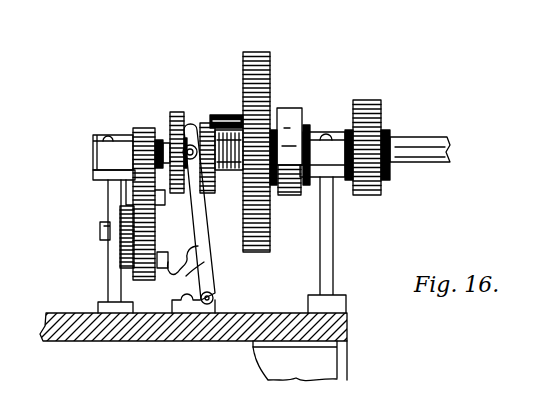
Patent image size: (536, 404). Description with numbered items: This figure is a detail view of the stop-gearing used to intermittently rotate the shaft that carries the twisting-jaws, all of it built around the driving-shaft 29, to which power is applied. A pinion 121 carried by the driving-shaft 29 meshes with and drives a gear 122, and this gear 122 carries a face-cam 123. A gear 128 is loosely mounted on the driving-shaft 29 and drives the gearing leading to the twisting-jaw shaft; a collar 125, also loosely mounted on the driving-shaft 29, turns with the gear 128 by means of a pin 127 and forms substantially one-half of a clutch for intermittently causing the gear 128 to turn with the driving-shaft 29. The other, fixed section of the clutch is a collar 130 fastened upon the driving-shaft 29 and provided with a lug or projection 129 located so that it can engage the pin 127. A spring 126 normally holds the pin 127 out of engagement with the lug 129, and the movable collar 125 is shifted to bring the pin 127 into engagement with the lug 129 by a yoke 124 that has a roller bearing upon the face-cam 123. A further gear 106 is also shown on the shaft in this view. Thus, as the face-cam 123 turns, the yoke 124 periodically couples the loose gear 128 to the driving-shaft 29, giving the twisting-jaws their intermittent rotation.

The pinion 121 is at (126, 135).
The gear 122 is at (155, 190).
The face-cam 123 is at (162, 236).
The yoke 124 is at (207, 278).
The collar 125 is at (209, 125).
The spring 126 is at (229, 175).
The pin 127 is at (229, 115).
The gear 128 is at (257, 93).
The lug or projection 129 is at (274, 178).
The collar 130 is at (288, 120).
The gear 106 is at (365, 110).
The driving-shaft 29 is at (410, 149).